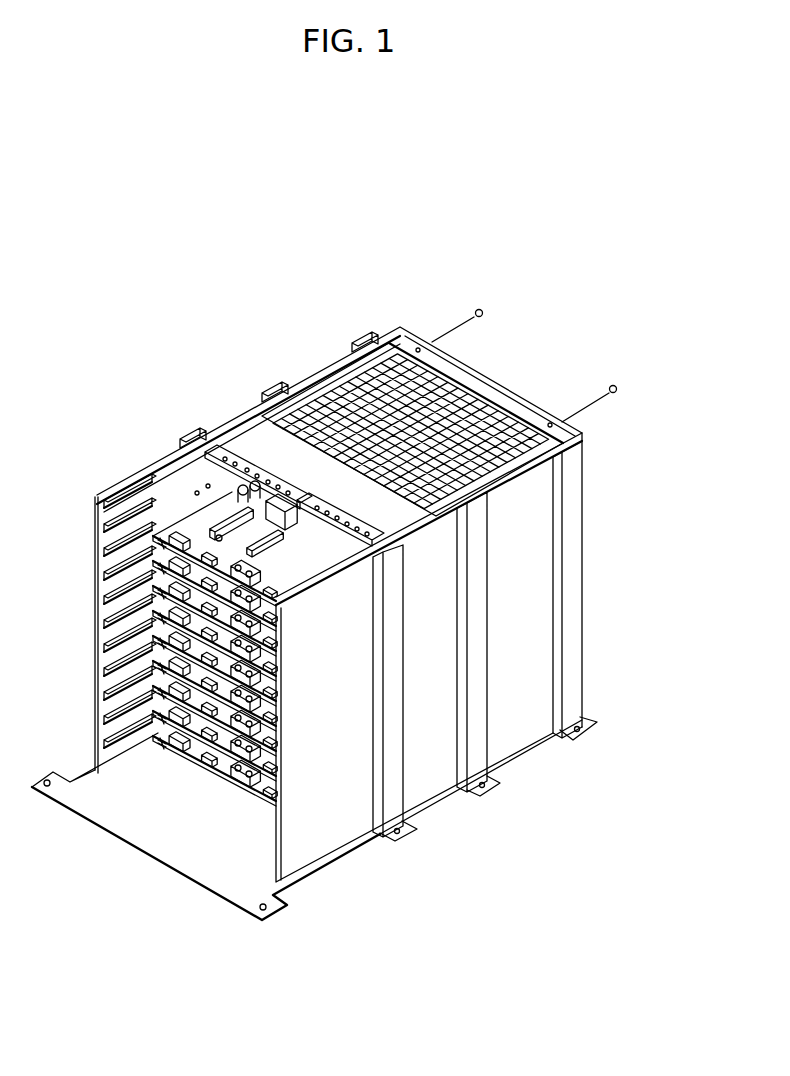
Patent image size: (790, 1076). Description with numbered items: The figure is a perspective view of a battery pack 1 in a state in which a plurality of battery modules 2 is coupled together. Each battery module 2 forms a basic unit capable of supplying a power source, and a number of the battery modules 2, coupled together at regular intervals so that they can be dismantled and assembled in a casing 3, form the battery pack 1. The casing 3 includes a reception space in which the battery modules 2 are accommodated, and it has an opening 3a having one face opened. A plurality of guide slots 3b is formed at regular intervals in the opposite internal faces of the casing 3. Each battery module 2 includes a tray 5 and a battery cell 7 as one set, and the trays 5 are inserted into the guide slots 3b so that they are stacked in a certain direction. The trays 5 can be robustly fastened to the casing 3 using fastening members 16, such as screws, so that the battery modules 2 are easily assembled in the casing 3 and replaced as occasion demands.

The battery pack 1 is at (511, 380).
The battery module 2 is at (113, 597).
The casing 3 is at (523, 575).
The opening 3a is at (250, 797).
The guide slots 3b is at (93, 535).
The tray 5 is at (457, 363).
The battery cell 7 is at (263, 435).
The fastening members 16 is at (477, 304).